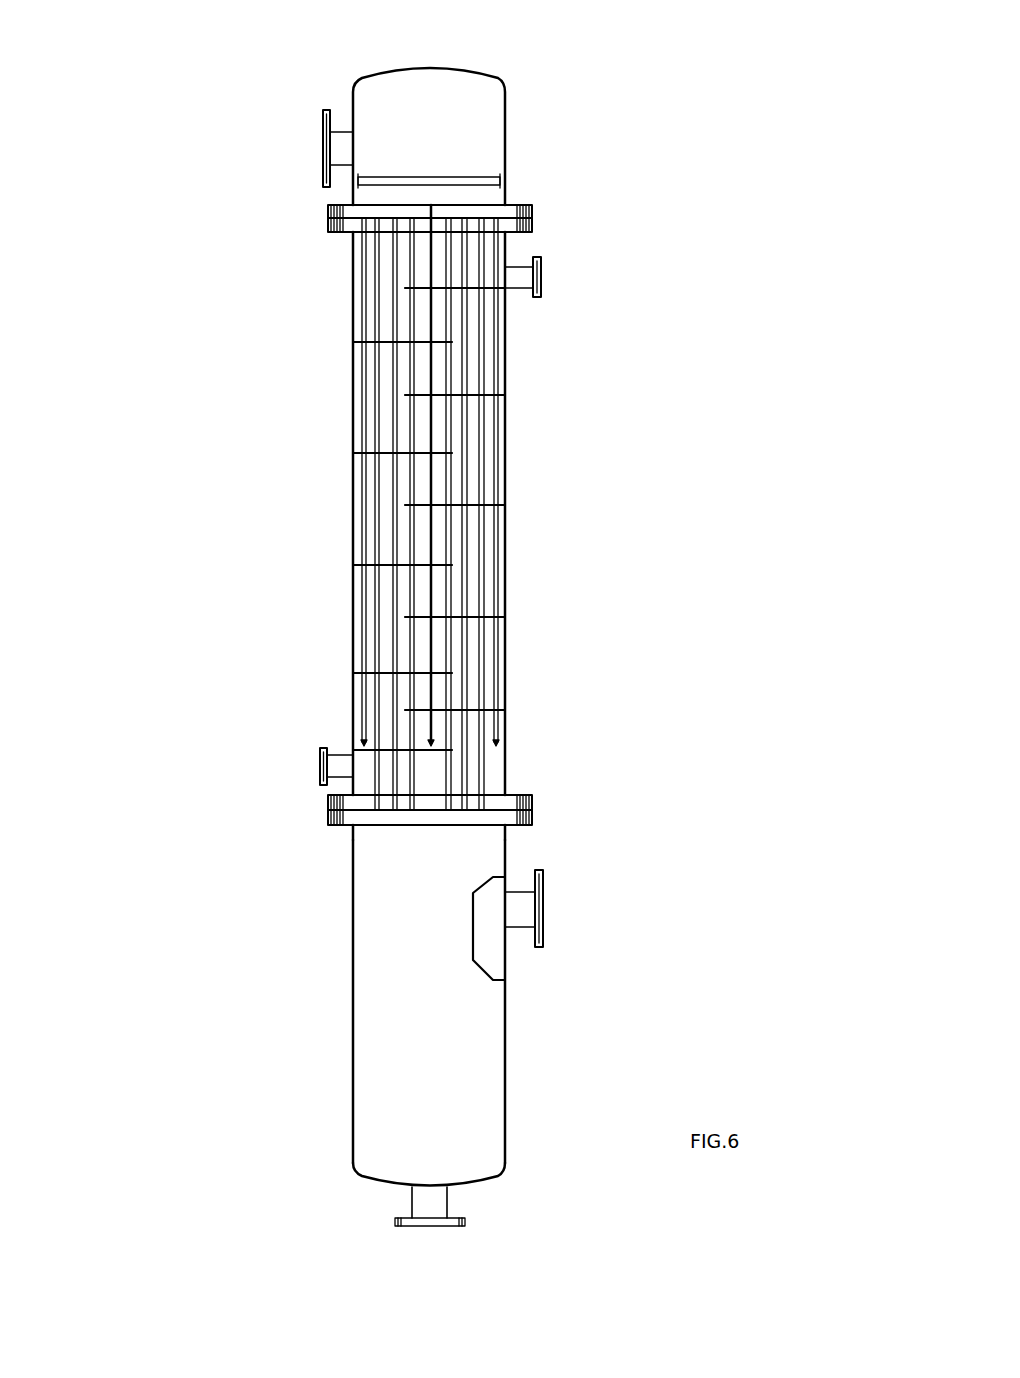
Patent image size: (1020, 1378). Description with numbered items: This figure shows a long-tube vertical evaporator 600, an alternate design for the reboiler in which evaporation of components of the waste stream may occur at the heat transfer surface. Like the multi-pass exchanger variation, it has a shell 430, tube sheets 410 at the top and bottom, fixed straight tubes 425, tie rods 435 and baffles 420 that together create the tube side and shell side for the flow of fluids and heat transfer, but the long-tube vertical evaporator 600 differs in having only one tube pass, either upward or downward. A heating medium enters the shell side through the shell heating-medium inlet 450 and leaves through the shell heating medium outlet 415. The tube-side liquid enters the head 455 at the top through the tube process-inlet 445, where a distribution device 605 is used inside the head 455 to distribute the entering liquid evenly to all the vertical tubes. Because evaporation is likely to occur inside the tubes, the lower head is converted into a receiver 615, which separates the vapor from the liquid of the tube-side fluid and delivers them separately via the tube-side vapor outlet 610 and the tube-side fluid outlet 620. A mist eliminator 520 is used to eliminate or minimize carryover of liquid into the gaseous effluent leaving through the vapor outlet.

The long-tube vertical evaporator 600 is at (172, 100).
The head 455 is at (490, 73).
The distribution device 605 is at (453, 180).
The tube process-inlet 445 is at (323, 144).
The tube sheet 410 is at (533, 228).
The shell heating medium outlet 415 is at (543, 277).
The baffles 420 is at (454, 342).
The fixed straight tubes 425 is at (483, 418).
The shell 430 is at (507, 483).
The tie rods 435 is at (497, 562).
The shell heating-medium inlet 450 is at (320, 765).
The tube-side vapor outlet 610 is at (545, 908).
The mist eliminator 520 is at (475, 943).
The receiver 615 is at (507, 1035).
The tube-side fluid outlet 620 is at (430, 1230).